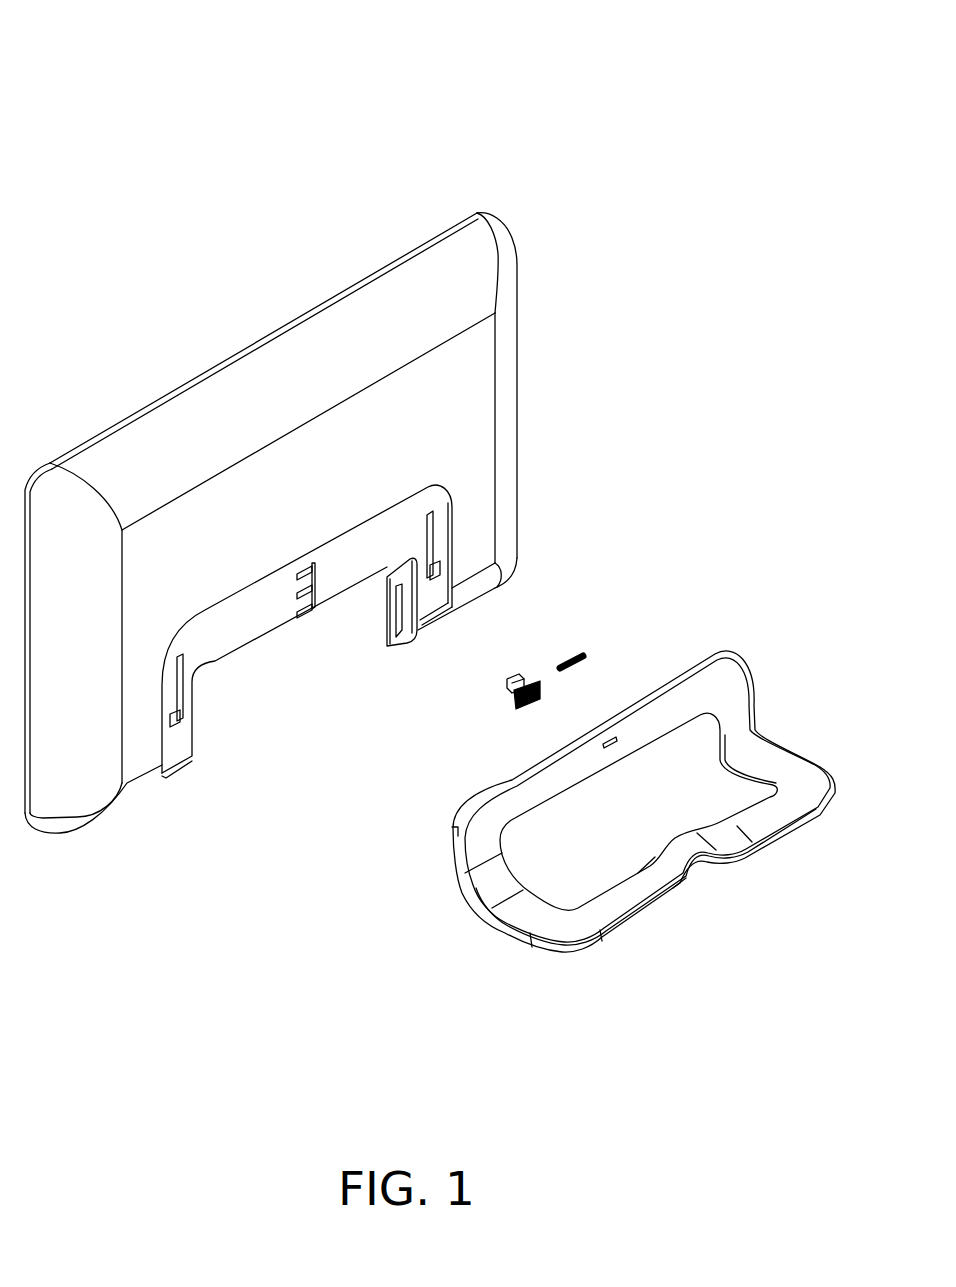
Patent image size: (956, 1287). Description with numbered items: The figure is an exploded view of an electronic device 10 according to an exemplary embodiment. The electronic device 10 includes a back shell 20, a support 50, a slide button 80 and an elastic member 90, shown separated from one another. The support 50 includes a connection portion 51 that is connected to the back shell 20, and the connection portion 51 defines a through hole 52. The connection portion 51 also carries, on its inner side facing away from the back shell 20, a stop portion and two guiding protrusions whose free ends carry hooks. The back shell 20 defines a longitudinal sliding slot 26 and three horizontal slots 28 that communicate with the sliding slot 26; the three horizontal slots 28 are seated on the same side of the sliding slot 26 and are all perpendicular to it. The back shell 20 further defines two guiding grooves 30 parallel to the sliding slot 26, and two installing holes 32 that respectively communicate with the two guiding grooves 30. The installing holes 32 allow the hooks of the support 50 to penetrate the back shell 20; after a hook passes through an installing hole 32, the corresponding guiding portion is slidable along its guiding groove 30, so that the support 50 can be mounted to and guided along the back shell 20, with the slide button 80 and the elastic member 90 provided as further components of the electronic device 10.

The electronic device 10 is at (246, 100).
The back shell 20 is at (157, 447).
The sliding slot 26 is at (317, 572).
The horizontal slots 28 is at (300, 567).
The guiding grooves 30 is at (217, 663).
The installing holes 32 is at (177, 725).
The support 50 is at (528, 793).
The connection portion 51 is at (697, 697).
The through hole 52 is at (610, 740).
The slide button 80 is at (520, 705).
The elastic member 90 is at (575, 653).